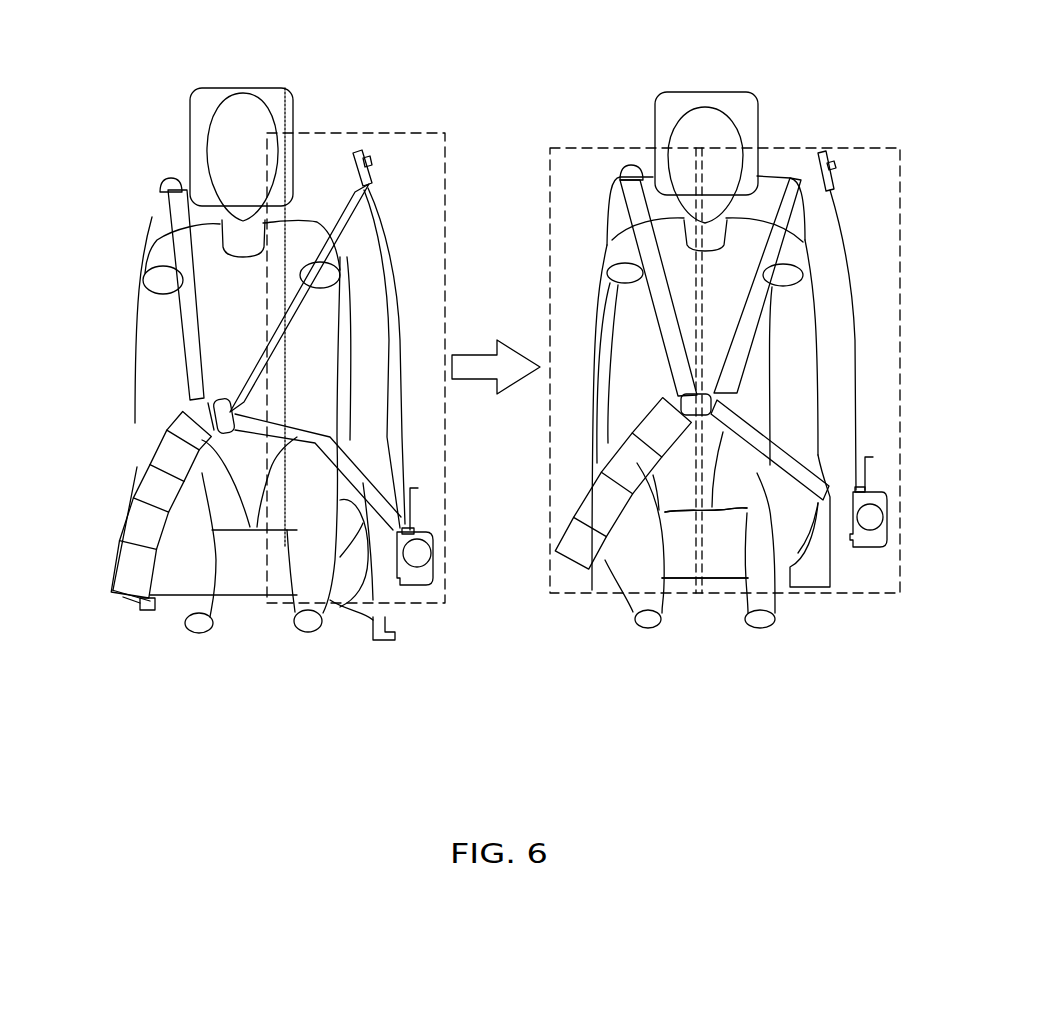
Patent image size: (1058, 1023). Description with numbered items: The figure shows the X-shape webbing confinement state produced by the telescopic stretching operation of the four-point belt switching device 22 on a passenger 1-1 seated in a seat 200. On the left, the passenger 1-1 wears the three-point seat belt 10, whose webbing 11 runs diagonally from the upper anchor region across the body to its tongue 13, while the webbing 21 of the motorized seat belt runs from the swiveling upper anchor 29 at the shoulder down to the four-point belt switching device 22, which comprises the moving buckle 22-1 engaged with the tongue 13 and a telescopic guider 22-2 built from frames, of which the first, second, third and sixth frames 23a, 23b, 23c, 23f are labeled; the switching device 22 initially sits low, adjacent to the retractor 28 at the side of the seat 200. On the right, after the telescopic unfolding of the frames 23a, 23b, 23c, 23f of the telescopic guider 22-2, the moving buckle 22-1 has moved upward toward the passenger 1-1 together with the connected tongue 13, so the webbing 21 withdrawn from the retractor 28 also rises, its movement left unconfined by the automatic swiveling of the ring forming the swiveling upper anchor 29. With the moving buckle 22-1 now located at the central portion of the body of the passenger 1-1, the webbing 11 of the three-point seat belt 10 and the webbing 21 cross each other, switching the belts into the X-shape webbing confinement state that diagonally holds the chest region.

The passenger 1-1 is at (243, 110).
The three-point seat belt 10 is at (375, 133).
The webbing 11 is at (755, 295).
The tongue 13 is at (233, 412).
The webbing 21 is at (183, 265).
The four-point belt switching device 22 is at (313, 727).
The moving buckle 22-1 is at (193, 412).
The telescopic guider 22-2 is at (605, 565).
The first frame 23a is at (183, 460).
The second frame 23b is at (165, 495).
The third frame 23c is at (148, 537).
The sixth frame 23f is at (140, 575).
The retractor 28 is at (143, 603).
The swiveling upper anchor 29 is at (172, 178).
The seat 200 is at (722, 555).